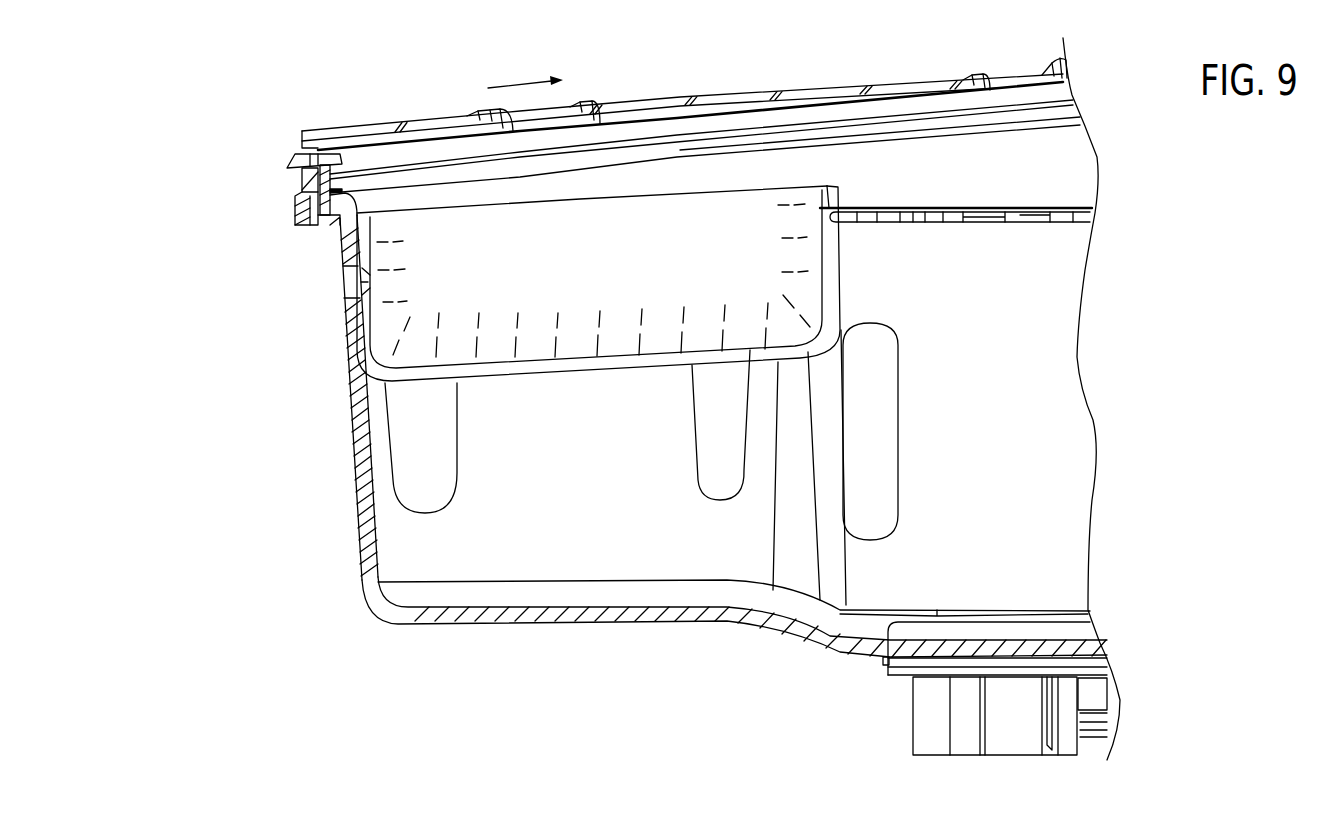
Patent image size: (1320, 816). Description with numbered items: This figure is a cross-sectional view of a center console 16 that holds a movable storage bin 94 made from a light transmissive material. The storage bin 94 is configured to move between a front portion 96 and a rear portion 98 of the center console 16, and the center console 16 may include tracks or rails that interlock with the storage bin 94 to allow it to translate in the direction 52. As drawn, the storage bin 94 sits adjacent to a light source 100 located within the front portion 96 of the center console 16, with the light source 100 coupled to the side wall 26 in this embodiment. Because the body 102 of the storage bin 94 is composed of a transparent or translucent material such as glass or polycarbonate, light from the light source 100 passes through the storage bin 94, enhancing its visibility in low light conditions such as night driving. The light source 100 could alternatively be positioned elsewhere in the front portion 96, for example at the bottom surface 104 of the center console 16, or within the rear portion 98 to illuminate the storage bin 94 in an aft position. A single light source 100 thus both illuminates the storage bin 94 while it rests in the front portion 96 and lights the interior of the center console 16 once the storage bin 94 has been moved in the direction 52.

The center console 16 is at (288, 457).
The side wall 26 is at (357, 418).
The direction 52 is at (527, 82).
The storage bin 94 is at (826, 268).
The front portion 96 is at (408, 76).
The rear portion 98 is at (913, 46).
The light source 100 is at (350, 283).
The body 102 is at (628, 362).
The bottom surface 104 is at (583, 607).